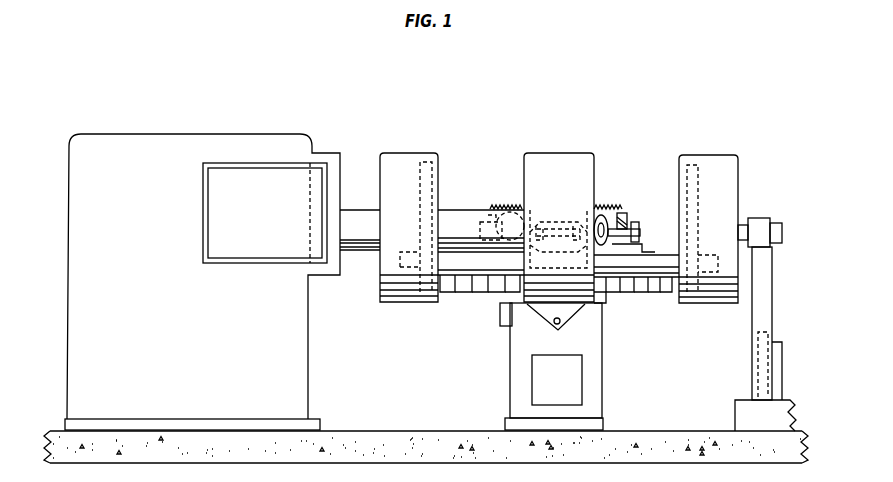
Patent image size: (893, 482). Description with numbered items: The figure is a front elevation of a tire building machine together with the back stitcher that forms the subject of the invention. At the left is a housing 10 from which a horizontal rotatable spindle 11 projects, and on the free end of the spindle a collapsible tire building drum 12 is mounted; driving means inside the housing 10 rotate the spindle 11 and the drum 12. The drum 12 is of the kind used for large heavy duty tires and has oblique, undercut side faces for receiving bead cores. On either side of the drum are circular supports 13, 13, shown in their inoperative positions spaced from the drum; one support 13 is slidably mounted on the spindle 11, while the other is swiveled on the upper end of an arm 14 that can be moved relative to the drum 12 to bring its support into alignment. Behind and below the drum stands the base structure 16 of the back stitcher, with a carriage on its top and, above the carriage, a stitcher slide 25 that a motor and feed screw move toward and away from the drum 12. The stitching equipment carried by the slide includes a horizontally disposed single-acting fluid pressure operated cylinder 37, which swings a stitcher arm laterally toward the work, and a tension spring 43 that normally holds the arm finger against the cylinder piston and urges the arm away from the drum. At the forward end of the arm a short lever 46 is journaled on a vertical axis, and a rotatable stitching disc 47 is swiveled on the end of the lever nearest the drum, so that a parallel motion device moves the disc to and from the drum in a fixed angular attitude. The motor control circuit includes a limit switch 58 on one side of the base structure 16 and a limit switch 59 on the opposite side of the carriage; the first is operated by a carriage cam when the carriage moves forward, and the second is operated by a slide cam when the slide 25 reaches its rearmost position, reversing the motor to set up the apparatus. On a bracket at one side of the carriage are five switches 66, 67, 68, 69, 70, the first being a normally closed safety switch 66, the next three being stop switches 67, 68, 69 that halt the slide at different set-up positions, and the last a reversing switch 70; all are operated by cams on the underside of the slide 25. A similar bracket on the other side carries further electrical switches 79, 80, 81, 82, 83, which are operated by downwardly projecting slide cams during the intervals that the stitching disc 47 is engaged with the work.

The housing 10 is at (240, 143).
The spindle 11 is at (357, 243).
The tire building drum 12 is at (562, 153).
The circular supports 13 is at (413, 153).
The arm 14 is at (772, 290).
The base structure 16 is at (600, 362).
The stitcher slide 25 is at (649, 262).
The fluid pressure operated cylinder 37 is at (616, 218).
The tension spring 43 is at (604, 206).
The lever 46 is at (634, 228).
The stitching disc 47 is at (597, 212).
The limit switch 58 is at (504, 326).
The limit switch 59 is at (600, 300).
The safety switch 66 is at (447, 291).
The stop switch 67 is at (462, 291).
The stop switch 68 is at (478, 291).
The stop switch 69 is at (495, 291).
The reversing switch 70 is at (512, 291).
The electrical switch 79 is at (612, 292).
The electrical switch 80 is at (627, 292).
The electrical switch 81 is at (641, 292).
The electrical switch 82 is at (654, 292).
The electrical switch 83 is at (666, 292).